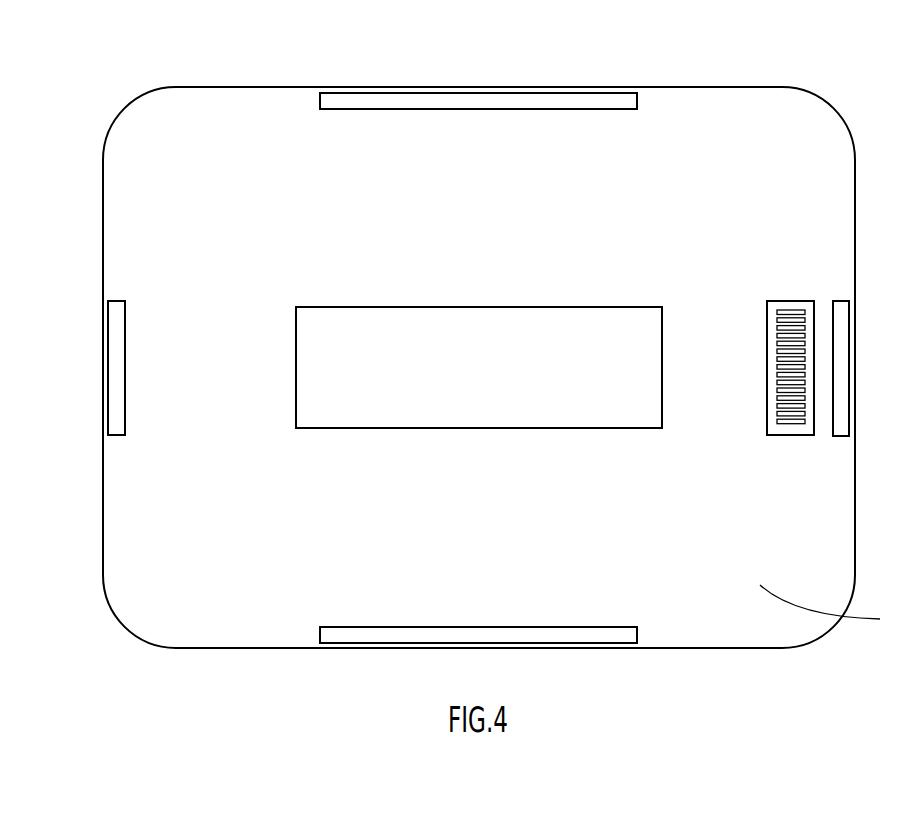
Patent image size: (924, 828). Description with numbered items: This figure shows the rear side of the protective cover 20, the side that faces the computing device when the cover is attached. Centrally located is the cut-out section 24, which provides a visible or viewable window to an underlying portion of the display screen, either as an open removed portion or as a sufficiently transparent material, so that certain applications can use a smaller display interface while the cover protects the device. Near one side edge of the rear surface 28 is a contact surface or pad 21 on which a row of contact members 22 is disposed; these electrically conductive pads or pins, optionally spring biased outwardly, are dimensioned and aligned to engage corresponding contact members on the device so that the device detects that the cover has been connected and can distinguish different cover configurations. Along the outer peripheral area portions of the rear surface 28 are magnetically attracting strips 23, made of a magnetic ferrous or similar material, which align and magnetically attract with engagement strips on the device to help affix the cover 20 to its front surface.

The protective cover 20 is at (728, 118).
The contact pad 21 is at (792, 435).
The contact members 22 is at (792, 308).
The magnetically attracting strips 23 is at (582, 645).
The cut-out section 24 is at (470, 379).
The rear surface 28 is at (833, 609).